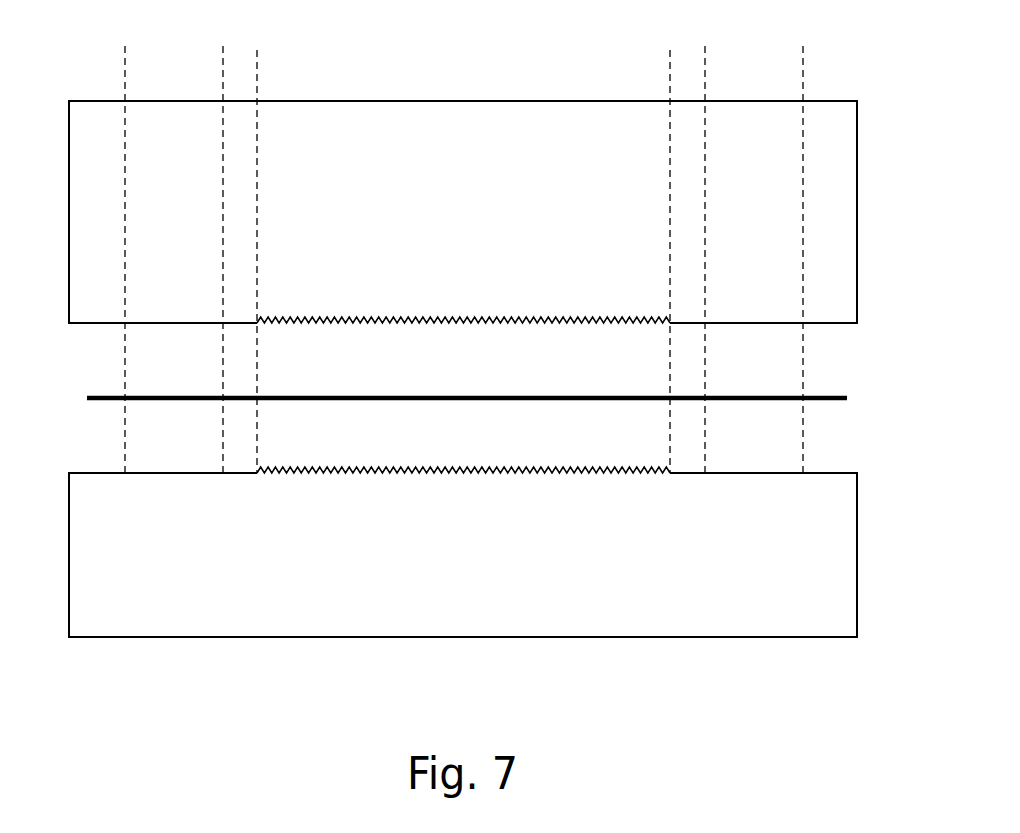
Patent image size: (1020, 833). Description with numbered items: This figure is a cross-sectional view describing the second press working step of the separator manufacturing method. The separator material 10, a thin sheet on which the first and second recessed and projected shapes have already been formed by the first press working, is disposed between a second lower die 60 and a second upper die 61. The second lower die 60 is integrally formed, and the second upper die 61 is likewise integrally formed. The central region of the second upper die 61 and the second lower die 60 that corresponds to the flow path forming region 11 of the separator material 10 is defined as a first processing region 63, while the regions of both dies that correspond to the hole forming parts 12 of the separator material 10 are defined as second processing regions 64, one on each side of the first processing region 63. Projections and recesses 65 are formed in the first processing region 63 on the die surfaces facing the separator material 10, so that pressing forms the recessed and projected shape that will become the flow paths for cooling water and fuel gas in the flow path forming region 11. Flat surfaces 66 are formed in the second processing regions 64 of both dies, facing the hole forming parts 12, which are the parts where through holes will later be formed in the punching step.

The separator material 10 is at (838, 397).
The flow path forming region 11 is at (397, 396).
The hole forming part 12 is at (172, 399).
The second lower die 60 is at (845, 572).
The second upper die 61 is at (850, 192).
The first processing region 63 is at (670, 52).
The second processing region 64 is at (223, 47).
The projections and recesses 65 is at (545, 324).
The flat surface 66 is at (145, 324).